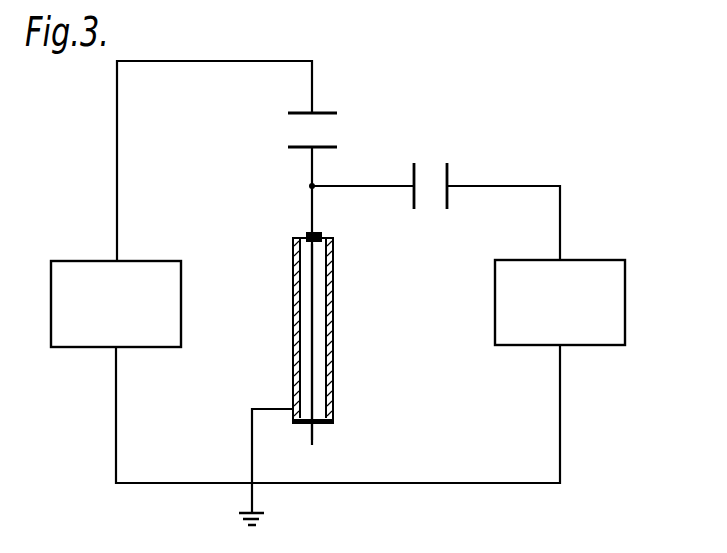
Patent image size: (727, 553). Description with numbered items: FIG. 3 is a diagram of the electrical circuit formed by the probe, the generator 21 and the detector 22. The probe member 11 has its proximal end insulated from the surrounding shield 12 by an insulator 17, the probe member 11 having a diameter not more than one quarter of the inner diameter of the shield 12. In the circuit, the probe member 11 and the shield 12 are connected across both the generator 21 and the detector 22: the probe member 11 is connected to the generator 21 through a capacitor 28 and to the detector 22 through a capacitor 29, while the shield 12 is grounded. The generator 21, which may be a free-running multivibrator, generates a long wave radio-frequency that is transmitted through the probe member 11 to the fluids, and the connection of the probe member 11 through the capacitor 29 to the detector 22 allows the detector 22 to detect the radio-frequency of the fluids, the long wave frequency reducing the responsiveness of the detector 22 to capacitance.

The probe member 11 is at (314, 352).
The shield 12 is at (334, 283).
The insulator 17 is at (305, 234).
The generator 21 is at (72, 261).
The detector 22 is at (618, 260).
The capacitor 28 is at (330, 112).
The capacitor 29 is at (447, 178).